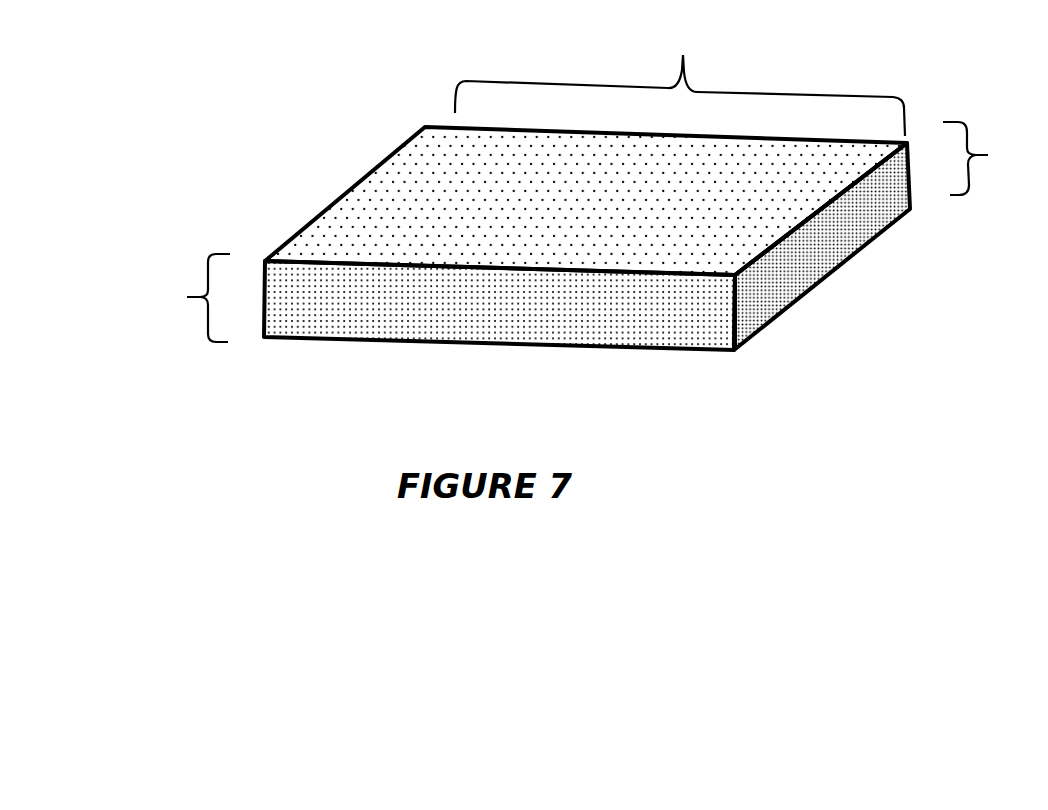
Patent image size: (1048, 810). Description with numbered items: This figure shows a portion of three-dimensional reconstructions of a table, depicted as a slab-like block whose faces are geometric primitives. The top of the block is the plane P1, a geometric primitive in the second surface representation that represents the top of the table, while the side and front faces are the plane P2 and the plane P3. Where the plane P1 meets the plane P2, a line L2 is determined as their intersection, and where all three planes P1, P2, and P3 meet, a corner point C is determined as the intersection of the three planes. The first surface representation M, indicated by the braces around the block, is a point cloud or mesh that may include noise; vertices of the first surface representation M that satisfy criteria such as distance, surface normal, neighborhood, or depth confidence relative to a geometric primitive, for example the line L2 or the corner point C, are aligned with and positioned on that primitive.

The first 3D surface representation M is at (566, 184).
The plane P1 is at (712, 254).
The plane P2 is at (824, 246).
The plane P3 is at (573, 326).
The line L2 is at (861, 183).
The corner point C is at (739, 278).